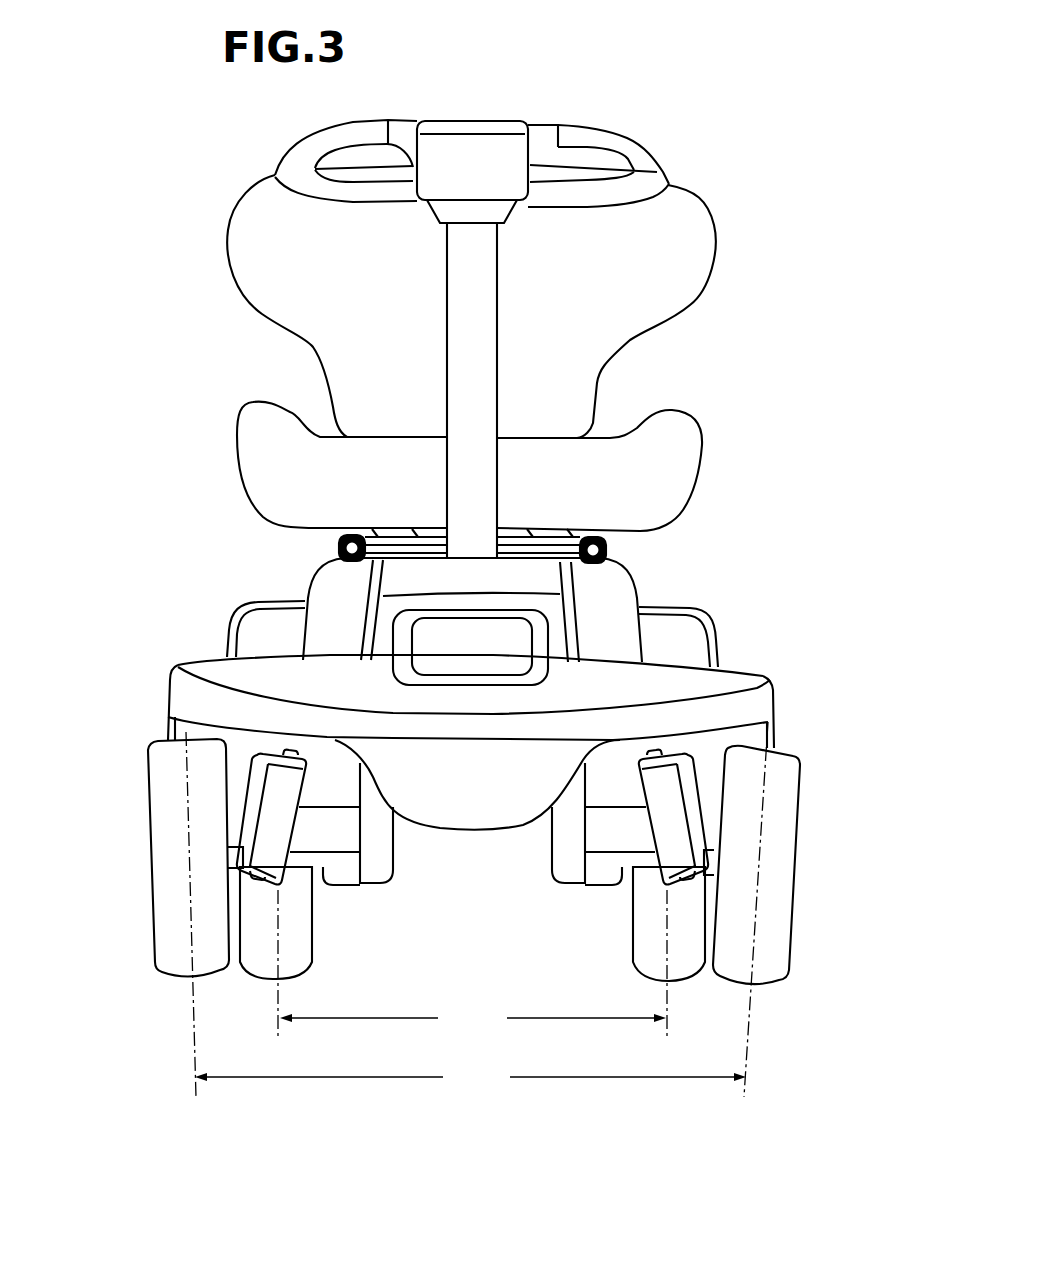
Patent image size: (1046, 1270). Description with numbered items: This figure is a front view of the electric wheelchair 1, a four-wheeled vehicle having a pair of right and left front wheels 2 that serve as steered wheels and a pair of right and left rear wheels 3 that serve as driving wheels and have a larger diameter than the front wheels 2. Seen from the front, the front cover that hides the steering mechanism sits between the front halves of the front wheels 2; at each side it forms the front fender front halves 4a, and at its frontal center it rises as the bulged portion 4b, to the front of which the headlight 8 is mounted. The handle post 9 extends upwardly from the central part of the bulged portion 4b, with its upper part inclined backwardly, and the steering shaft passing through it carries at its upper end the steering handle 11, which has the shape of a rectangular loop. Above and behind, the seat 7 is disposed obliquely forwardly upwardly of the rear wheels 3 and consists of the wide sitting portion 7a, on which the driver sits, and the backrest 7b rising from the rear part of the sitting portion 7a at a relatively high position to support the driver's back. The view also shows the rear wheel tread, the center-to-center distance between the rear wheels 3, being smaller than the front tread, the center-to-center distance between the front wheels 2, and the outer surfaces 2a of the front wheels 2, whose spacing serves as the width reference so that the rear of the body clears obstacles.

The electric wheelchair 1 is at (170, 160).
The front wheel 2 is at (163, 914).
The outer surface of front wheel 2a is at (148, 817).
The rear wheel 3 is at (300, 950).
The front fender front half 4a is at (178, 672).
The bulged portion 4b is at (553, 614).
The seat 7 is at (706, 465).
The sitting portion 7a is at (672, 424).
The backrest 7b is at (673, 223).
The headlight 8 is at (447, 642).
The handle post 9 is at (458, 352).
The steering handle 11 is at (585, 128).